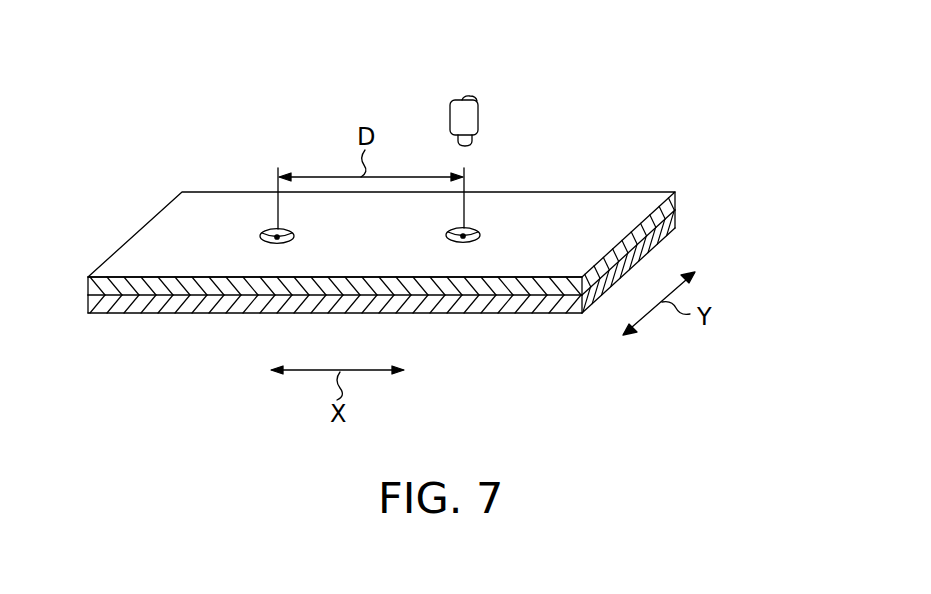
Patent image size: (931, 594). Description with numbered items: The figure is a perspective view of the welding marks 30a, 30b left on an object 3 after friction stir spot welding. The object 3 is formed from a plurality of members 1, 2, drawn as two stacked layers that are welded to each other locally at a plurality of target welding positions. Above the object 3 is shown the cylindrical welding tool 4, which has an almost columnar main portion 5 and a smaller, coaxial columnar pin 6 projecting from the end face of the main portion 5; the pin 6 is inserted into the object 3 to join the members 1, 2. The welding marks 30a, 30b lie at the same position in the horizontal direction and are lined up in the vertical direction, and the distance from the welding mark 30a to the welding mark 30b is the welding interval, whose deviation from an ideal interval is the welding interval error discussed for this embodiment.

The member 1 is at (676, 197).
The member 2 is at (407, 261).
The object 3 is at (429, 244).
The welding tool 4 is at (510, 123).
The main portion 5 is at (478, 107).
The pin 6 is at (492, 140).
The welding mark 30a is at (295, 236).
The welding mark 30b is at (481, 235).